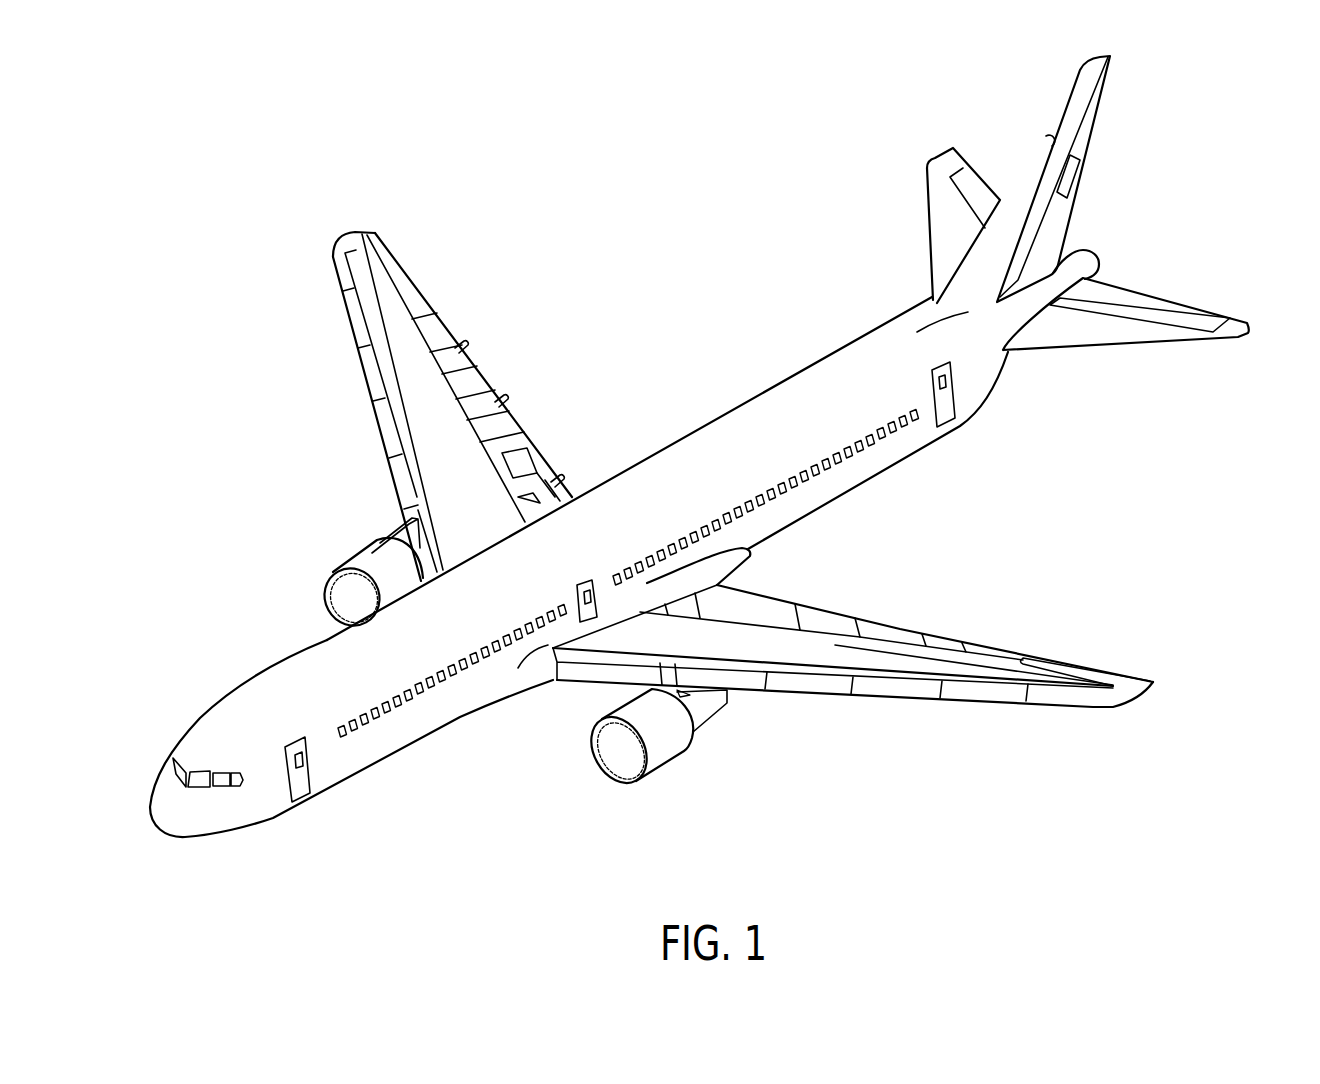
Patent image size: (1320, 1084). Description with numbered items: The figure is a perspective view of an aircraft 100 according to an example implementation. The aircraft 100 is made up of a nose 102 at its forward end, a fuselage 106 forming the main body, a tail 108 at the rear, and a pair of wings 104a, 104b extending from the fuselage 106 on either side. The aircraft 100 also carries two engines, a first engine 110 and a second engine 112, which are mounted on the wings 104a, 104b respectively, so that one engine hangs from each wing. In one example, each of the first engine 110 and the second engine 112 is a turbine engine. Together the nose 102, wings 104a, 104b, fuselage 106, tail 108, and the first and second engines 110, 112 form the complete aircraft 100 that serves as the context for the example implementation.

The aircraft 100 is at (611, 381).
The nose 102 is at (174, 852).
The wing 104a is at (388, 226).
The wing 104b is at (1168, 681).
The fuselage 106 is at (815, 497).
The tail 108 is at (1124, 70).
The first engine 110 is at (355, 562).
The second engine 112 is at (663, 748).